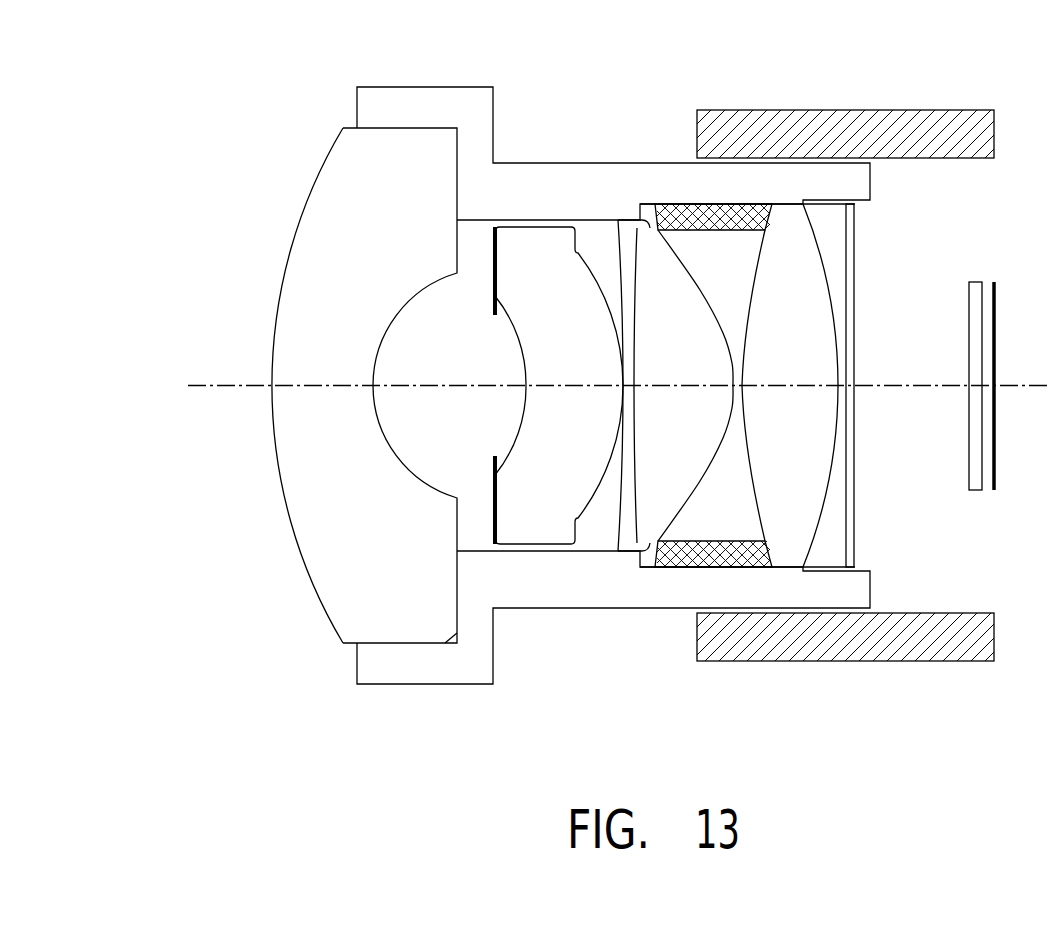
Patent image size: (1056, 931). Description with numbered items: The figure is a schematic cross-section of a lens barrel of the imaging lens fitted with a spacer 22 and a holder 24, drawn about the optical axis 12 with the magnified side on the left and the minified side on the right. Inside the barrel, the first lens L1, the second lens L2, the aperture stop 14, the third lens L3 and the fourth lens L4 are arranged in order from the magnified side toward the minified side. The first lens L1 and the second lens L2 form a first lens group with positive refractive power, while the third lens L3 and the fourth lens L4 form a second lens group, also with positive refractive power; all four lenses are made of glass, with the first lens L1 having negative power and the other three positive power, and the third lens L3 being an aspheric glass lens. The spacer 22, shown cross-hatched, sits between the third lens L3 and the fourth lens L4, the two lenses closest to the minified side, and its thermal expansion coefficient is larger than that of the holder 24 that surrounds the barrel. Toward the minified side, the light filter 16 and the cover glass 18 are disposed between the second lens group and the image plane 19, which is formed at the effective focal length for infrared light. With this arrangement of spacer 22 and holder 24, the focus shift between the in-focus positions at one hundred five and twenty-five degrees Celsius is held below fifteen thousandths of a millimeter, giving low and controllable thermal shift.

The optical axis 12 is at (230, 385).
The aperture stop 14 is at (495, 272).
The light filter 16 is at (856, 268).
The cover glass 18 is at (974, 283).
The image plane 19 is at (996, 292).
The spacer 22 is at (690, 215).
The holder 24 is at (862, 140).
The first lens L1 is at (396, 143).
The second lens L2 is at (537, 235).
The third lens L3 is at (637, 232).
The fourth lens L4 is at (783, 217).